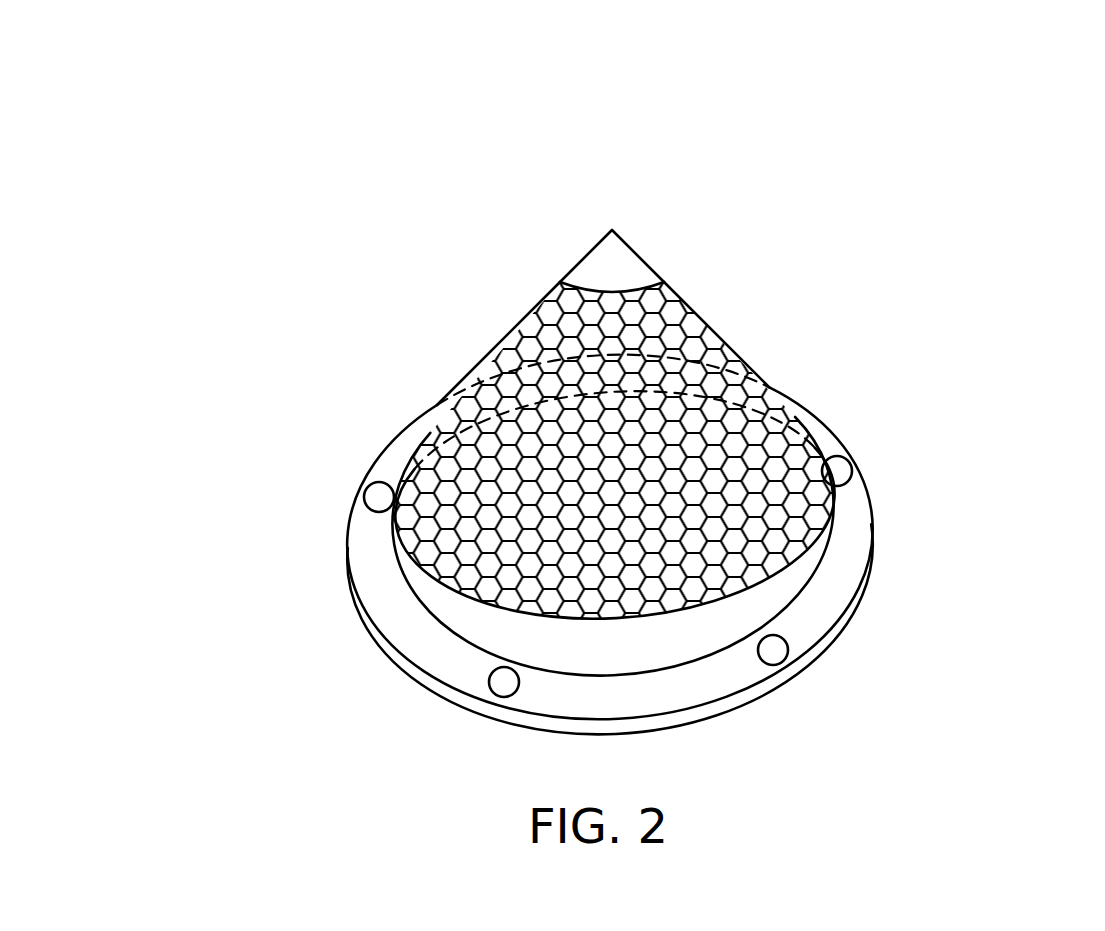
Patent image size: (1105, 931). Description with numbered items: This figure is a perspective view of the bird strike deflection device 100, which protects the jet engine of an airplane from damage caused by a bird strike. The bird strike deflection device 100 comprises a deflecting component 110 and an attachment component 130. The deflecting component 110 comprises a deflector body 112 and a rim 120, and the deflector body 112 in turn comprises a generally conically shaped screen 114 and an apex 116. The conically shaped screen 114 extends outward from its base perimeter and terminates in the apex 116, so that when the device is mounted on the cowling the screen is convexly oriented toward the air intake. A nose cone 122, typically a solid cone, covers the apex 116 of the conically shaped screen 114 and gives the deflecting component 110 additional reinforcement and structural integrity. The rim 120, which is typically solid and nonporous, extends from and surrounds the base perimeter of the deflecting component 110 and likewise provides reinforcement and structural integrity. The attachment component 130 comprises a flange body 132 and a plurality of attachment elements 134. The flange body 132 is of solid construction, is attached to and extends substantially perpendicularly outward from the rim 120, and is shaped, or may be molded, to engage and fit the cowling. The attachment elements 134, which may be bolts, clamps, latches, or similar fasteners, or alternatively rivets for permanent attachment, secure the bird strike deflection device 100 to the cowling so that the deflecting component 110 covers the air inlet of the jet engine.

The bird strike deflection device 100 is at (880, 192).
The deflecting component 110 is at (821, 331).
The deflector body 112 is at (435, 269).
The conically shaped screen 114 is at (425, 422).
The apex 116 is at (571, 237).
The rim 120 is at (803, 557).
The nose cone 122 is at (607, 270).
The attachment component 130 is at (337, 608).
The flange body 132 is at (438, 650).
The attachment elements 134 is at (773, 650).